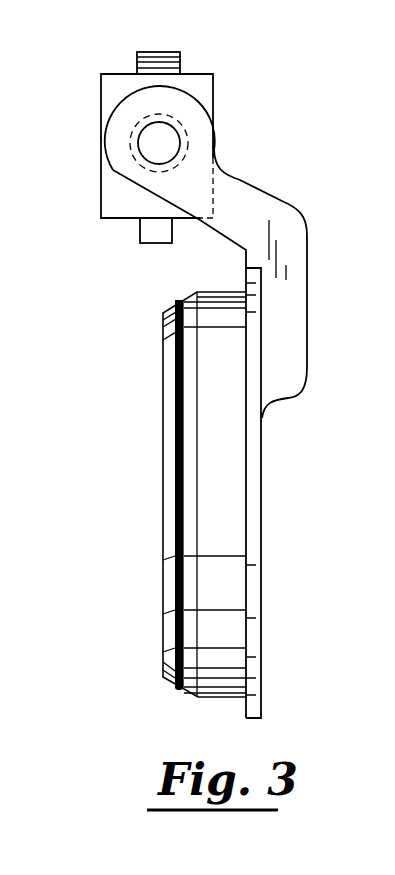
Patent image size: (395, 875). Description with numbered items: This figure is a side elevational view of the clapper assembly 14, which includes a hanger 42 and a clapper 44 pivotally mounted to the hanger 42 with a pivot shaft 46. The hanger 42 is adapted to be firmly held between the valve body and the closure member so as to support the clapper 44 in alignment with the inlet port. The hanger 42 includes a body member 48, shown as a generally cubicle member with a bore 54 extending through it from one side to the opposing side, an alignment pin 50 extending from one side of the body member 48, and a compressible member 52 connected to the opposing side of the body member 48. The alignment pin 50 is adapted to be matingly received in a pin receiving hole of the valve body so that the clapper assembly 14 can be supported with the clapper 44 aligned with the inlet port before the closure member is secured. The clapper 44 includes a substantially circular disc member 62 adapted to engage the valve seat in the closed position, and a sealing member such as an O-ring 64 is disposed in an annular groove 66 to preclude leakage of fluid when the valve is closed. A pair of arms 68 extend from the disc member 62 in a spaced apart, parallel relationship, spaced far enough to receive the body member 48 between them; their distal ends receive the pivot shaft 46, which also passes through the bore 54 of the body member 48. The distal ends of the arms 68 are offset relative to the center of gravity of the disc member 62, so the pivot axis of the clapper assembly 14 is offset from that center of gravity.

The clapper assembly 14 is at (335, 135).
The hanger 42 is at (98, 88).
The clapper 44 is at (262, 538).
The pivot shaft 46 is at (150, 147).
The body member 48 is at (100, 197).
The alignment pin 50 is at (157, 237).
The compressible member 52 is at (166, 50).
The bore 54 is at (168, 123).
The disc member 62 is at (262, 625).
The O-ring 64 is at (177, 302).
The annular groove 66 is at (180, 416).
The arms 68 is at (308, 233).